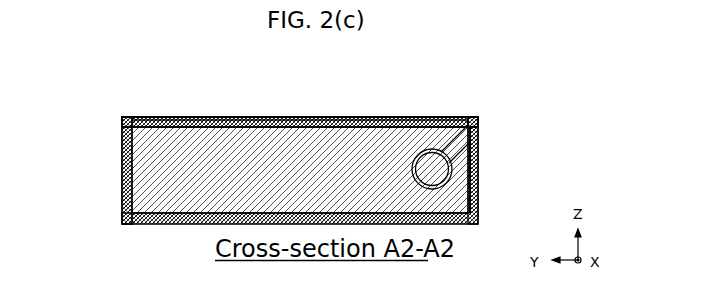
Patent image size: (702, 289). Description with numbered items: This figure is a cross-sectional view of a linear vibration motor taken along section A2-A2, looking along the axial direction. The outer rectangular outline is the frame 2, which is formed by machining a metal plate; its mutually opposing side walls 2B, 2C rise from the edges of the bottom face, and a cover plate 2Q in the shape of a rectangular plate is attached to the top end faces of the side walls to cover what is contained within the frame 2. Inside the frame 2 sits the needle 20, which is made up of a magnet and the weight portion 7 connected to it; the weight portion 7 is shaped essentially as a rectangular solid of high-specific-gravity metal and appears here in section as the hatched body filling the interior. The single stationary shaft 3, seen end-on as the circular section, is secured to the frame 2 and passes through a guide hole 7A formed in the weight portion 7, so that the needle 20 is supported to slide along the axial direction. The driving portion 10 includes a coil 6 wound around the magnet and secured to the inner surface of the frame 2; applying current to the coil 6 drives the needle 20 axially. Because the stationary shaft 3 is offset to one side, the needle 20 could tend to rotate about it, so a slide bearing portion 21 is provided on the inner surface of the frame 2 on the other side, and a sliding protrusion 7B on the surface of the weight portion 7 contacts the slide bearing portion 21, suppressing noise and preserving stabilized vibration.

The frame 2 is at (457, 224).
The side wall 2B is at (122, 140).
The side wall 2C is at (478, 160).
The cover plate 2Q is at (442, 117).
The slide bearing portion 21 is at (122, 118).
The stationary shaft 3 is at (478, 195).
The coil 6 is at (465, 117).
The driving portion 10 is at (473, 122).
The weight portion 7 is at (373, 122).
The needle 20 is at (300, 102).
The guide hole 7A is at (477, 135).
The sliding protrusion 7B is at (153, 118).